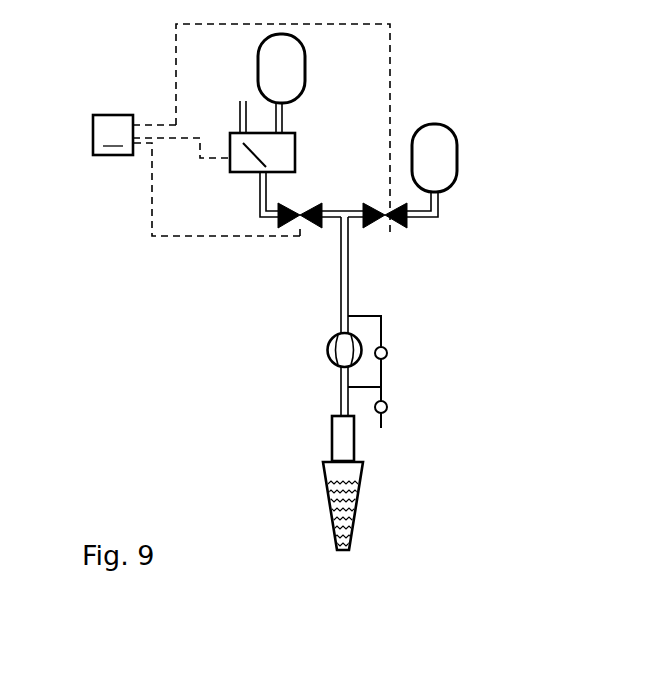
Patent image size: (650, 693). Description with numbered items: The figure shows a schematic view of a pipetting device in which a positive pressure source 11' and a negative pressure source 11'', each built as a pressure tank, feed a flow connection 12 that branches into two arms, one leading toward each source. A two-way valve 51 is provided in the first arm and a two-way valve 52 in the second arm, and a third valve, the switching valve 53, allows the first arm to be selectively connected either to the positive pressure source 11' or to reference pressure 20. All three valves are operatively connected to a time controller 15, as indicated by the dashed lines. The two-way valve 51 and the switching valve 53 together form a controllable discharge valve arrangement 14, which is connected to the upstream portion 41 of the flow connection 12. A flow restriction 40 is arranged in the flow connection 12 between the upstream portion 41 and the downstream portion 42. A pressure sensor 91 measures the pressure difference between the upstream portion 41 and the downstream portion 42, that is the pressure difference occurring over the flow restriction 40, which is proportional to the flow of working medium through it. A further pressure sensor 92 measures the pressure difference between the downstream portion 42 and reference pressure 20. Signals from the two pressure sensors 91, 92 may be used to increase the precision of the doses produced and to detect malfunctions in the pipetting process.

The positive pressure source 11' is at (326, 83).
The negative pressure source 11'' is at (476, 168).
The flow connection 12 is at (349, 254).
The controllable discharge valve arrangement 14 is at (221, 222).
The time controller 15 is at (113, 135).
The reference pressure 20 is at (241, 88).
The flow restriction 40 is at (327, 352).
The upstream portion 41 is at (321, 309).
The downstream portion 42 is at (326, 384).
The two-way valve 51 is at (304, 229).
The two-way valve 52 is at (389, 228).
The switching valve 53 is at (230, 164).
The pressure sensor 91 is at (394, 351).
The pressure sensor 92 is at (394, 407).